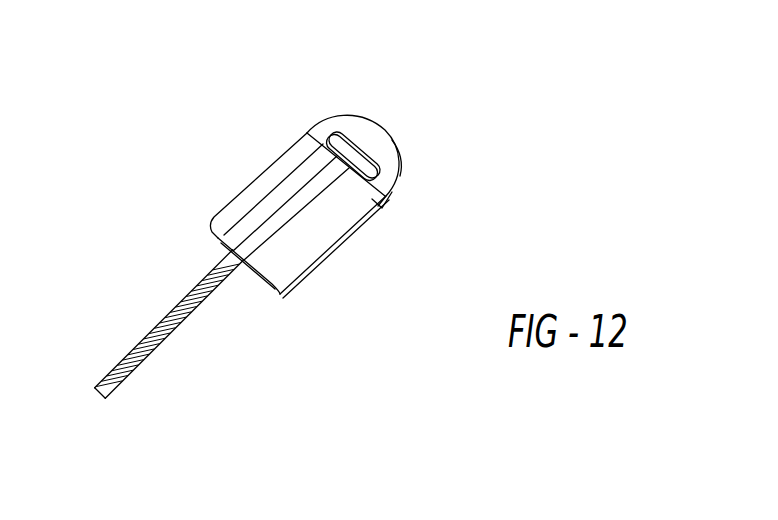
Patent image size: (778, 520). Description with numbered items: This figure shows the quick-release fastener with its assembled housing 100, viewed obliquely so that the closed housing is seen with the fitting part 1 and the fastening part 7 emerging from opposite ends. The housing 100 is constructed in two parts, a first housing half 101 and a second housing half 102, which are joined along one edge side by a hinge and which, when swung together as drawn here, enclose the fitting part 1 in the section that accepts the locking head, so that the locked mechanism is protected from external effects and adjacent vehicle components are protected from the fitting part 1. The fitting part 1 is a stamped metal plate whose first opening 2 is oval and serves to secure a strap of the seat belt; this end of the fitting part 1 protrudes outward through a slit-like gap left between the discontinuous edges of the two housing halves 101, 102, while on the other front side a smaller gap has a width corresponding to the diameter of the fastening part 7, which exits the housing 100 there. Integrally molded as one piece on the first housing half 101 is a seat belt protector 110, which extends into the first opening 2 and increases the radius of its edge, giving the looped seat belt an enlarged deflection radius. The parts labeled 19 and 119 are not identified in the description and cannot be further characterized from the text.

The housing 100 is at (283, 168).
The first housing half 101 is at (302, 279).
The second housing half 102 is at (284, 258).
The fitting part 1 is at (397, 186).
The seat belt protector 110 is at (400, 176).
The cap lower edge 119 is at (378, 207).
The first opening 2 is at (342, 146).
The slot inner wall 19 is at (366, 140).
The fastening part 7 is at (125, 358).